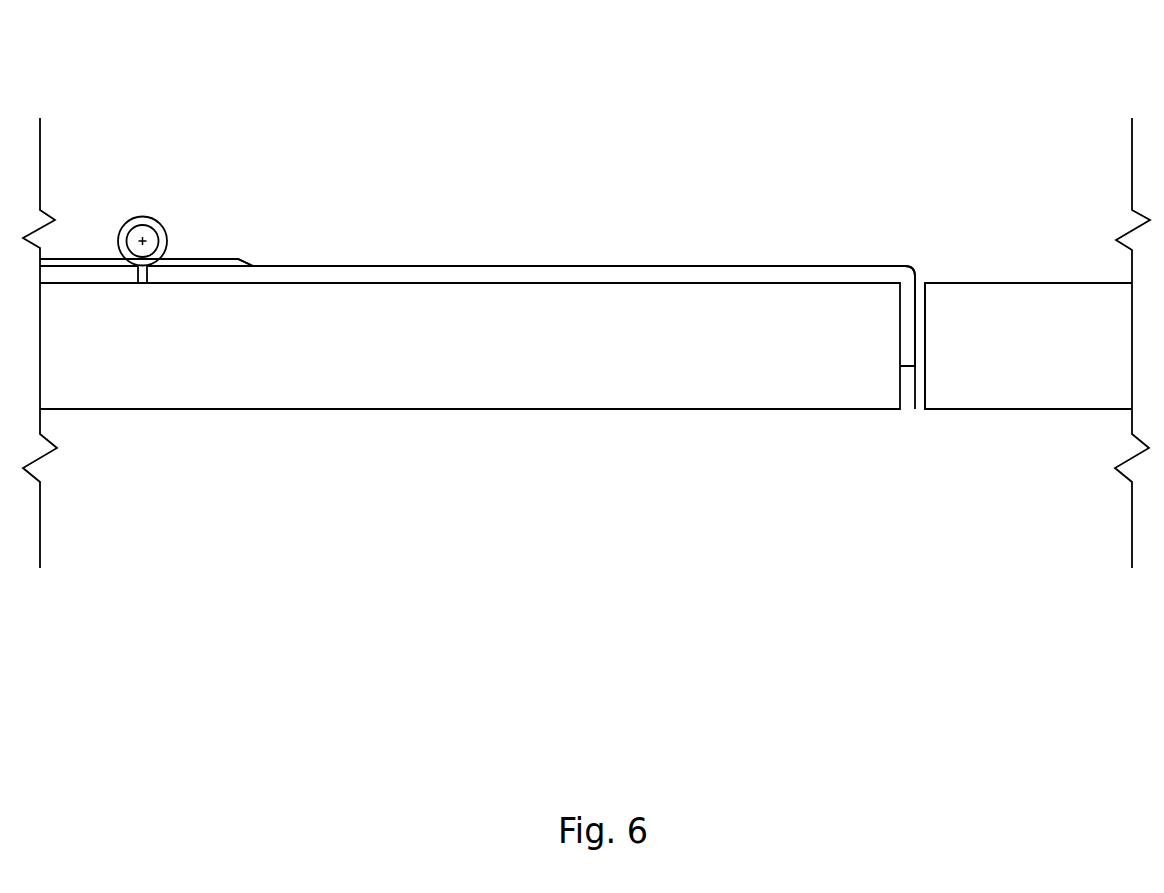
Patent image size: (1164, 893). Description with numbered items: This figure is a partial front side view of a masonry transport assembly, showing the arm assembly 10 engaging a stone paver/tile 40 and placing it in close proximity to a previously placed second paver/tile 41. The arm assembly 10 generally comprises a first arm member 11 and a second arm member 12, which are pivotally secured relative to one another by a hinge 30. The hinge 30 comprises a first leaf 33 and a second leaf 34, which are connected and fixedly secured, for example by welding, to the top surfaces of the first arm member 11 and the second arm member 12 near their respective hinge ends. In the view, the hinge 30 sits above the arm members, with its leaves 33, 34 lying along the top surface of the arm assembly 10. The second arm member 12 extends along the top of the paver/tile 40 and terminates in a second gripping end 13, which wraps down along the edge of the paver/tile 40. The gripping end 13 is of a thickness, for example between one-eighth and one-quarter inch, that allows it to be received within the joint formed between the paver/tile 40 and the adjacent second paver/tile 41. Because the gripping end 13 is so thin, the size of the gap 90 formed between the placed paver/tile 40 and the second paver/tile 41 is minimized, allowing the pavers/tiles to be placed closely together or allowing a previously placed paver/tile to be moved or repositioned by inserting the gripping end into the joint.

The arm assembly 10 is at (586, 306).
The first arm member 11 is at (59, 262).
The second arm member 12 is at (598, 265).
The second gripping end 13 is at (923, 278).
The hinge 30 is at (157, 218).
The first leaf 33 is at (95, 255).
The second leaf 34 is at (213, 258).
The paver/tile 40 is at (552, 388).
The second paver/tile 41 is at (1005, 377).
The gap 90 is at (912, 387).